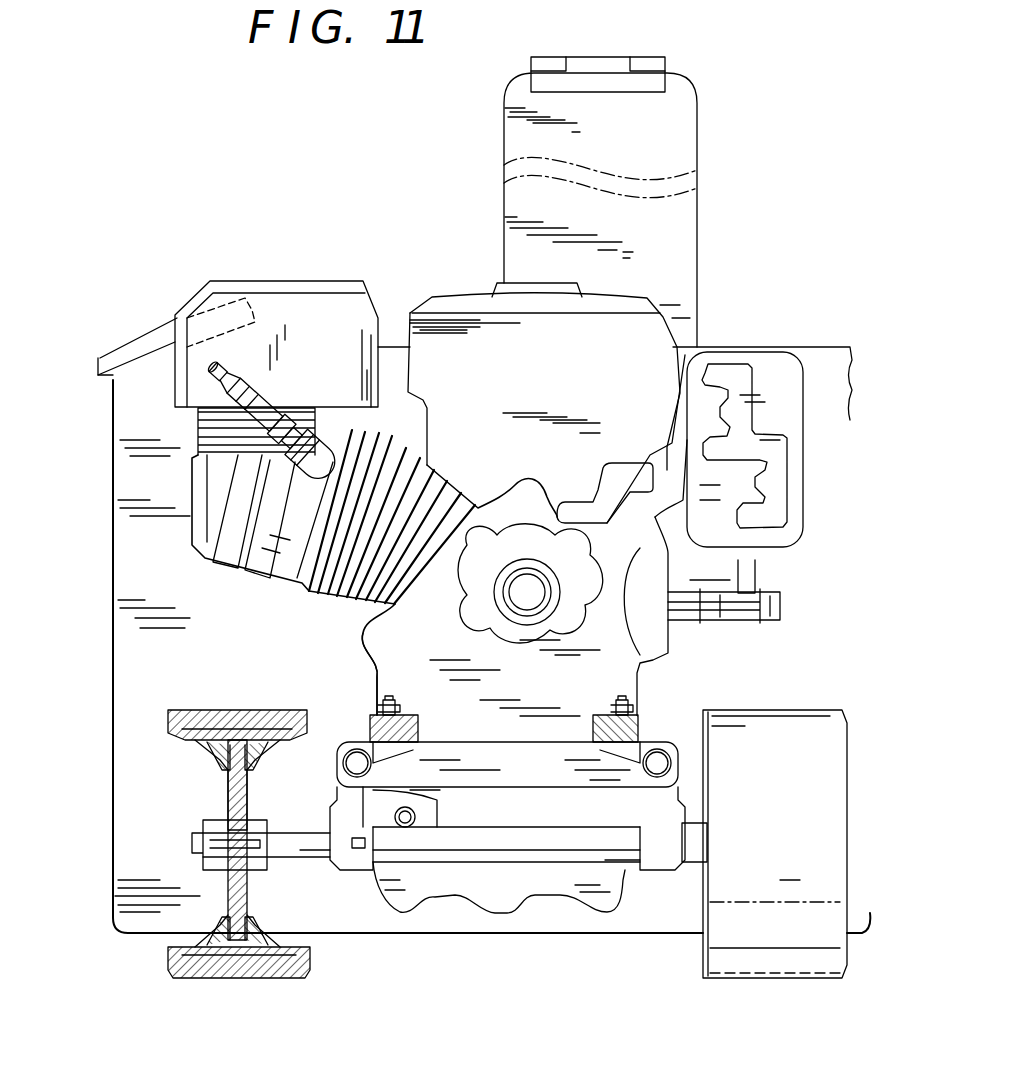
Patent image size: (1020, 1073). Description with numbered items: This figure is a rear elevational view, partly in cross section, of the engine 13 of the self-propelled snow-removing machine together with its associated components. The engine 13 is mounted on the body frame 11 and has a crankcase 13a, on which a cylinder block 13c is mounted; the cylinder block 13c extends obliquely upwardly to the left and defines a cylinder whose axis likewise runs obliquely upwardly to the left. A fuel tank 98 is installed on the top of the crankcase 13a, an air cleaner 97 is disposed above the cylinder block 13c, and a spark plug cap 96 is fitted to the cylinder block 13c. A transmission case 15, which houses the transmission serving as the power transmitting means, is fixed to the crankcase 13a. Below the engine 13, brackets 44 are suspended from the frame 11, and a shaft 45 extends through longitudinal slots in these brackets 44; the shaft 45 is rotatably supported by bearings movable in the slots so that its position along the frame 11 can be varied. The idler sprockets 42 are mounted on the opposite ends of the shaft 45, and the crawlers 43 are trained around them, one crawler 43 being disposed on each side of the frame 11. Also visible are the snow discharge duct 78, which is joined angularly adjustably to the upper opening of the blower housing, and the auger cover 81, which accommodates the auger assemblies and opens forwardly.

The body frame 11 is at (657, 758).
The engine 13 is at (332, 648).
The crankcase 13a is at (375, 672).
The cylinder block 13c is at (333, 612).
The transmission case 15 is at (553, 883).
The idler sprocket 42 is at (207, 762).
The crawler 43 is at (242, 970).
The bracket 44 is at (353, 858).
The shaft 45 is at (478, 843).
The snow discharge duct 78 is at (673, 140).
The auger cover 81 is at (433, 913).
The spark plug cap 96 is at (320, 473).
The air cleaner 97 is at (315, 305).
The fuel tank 98 is at (465, 303).